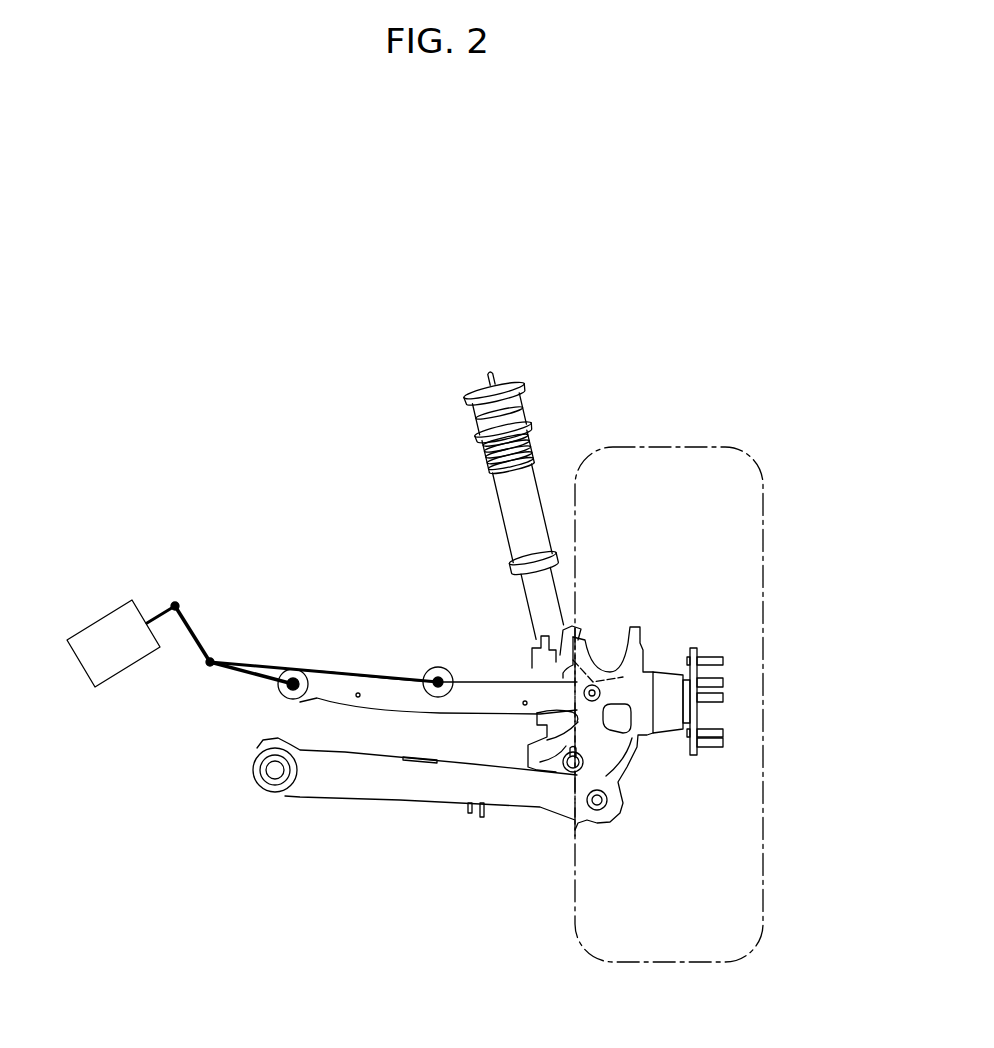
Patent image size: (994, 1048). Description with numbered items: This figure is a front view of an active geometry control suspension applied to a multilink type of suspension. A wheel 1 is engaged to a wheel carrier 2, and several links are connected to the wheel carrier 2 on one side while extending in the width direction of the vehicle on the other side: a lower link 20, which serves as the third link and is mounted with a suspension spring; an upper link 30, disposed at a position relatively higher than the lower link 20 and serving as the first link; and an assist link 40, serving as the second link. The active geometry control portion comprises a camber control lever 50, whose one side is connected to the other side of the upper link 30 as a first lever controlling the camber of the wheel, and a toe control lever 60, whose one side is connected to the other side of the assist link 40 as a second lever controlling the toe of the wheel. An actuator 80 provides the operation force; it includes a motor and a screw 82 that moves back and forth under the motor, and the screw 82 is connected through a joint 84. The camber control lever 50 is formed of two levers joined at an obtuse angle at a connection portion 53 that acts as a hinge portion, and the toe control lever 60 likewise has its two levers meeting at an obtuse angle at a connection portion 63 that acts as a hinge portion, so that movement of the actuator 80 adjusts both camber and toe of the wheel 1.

The wheel 1 is at (671, 443).
The wheel carrier 2 is at (651, 676).
The lower link 20 is at (425, 803).
The upper link 30 is at (380, 712).
The assist link 40 is at (490, 673).
The camber control lever 50 is at (163, 618).
The connection portion 53 is at (225, 605).
The connection portion 63 is at (213, 657).
The toe control lever 60 is at (247, 656).
The actuator 80 is at (90, 623).
The screw 82 is at (152, 613).
The joint 84 is at (173, 600).